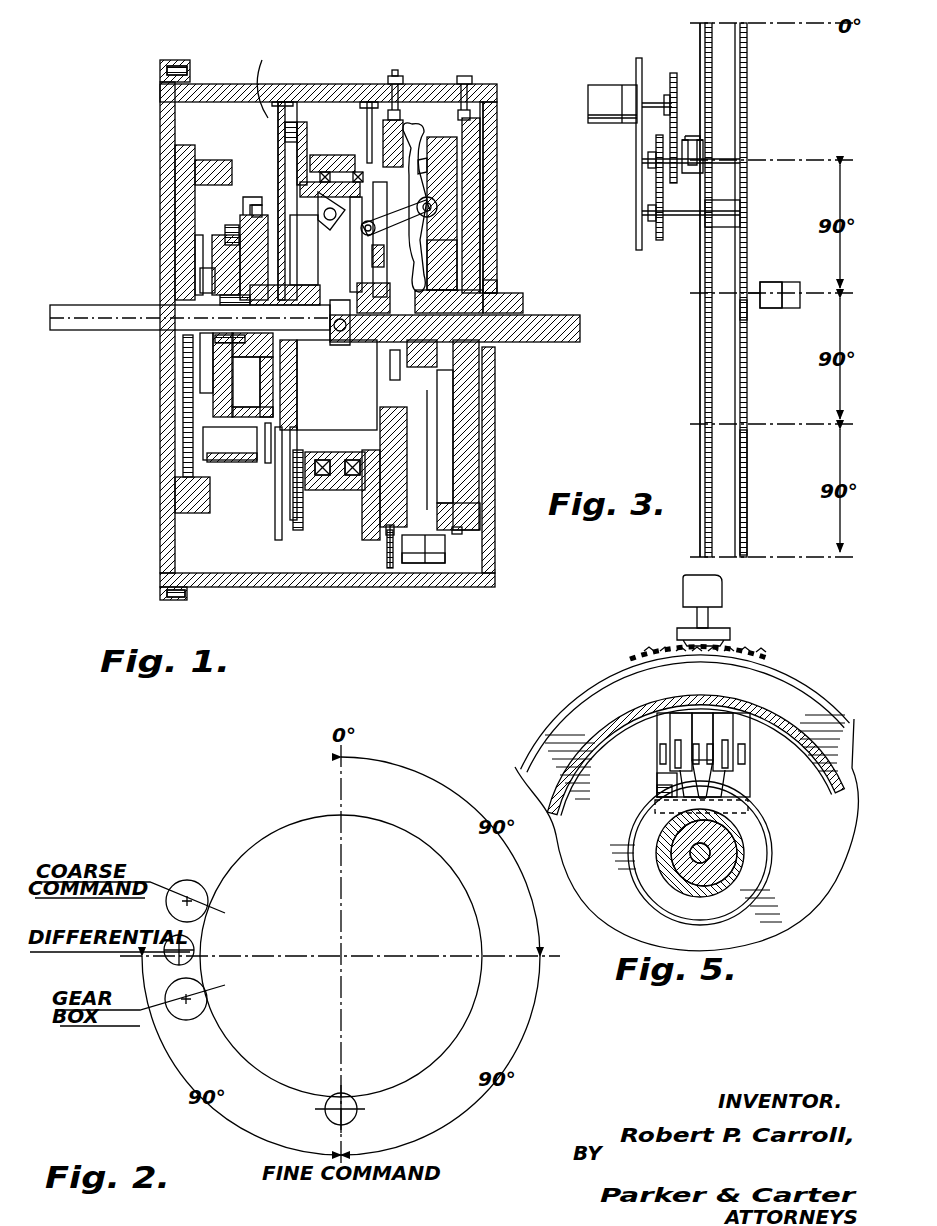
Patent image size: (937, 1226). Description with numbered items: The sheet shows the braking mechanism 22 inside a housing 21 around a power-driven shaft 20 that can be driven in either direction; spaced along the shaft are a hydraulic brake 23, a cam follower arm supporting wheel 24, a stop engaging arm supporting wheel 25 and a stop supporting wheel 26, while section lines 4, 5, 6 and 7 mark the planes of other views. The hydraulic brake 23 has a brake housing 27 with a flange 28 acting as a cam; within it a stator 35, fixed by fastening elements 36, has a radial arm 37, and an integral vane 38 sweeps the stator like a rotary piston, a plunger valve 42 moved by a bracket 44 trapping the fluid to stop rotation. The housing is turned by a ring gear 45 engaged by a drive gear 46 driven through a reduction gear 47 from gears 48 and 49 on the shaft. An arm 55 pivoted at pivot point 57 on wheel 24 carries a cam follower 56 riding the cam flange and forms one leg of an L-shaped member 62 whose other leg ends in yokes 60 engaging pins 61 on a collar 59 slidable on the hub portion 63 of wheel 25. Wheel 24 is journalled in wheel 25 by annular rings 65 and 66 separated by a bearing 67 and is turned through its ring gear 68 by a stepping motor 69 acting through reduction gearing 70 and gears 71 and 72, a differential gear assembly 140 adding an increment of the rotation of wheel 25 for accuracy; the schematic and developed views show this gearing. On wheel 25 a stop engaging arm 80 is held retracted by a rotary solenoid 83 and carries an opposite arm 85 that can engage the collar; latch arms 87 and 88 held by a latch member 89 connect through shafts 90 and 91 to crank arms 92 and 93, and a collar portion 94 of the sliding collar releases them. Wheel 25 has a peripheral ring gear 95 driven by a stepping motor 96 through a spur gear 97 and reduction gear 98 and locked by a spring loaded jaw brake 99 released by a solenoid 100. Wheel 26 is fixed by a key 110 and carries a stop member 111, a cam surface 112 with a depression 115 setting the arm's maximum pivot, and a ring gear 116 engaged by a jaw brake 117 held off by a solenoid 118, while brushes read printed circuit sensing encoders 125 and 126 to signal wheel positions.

In FIG. 1, the section line 4- 4 is at (415, 80).
In FIG. 1, the section line 5— 5 is at (405, 28).
In FIG. 1, the section line 6- 6 is at (372, 102).
In FIG. 1, the section line 7- 7 is at (260, 185).
In FIG. 1, the power-driven shaft 20 is at (540, 316).
In FIG. 5, the power-driven shaft 20 is at (692, 856).
In FIG. 1, the housing 21 is at (482, 230).
In FIG. 1, the braking mechanism 22 is at (252, 118).
In FIG. 1, the hydraulic brake 23 is at (245, 238).
In FIG. 1, the cam follower arm supporting wheel 24 is at (300, 118).
In FIG. 3, the cam follower arm supporting wheel 24 is at (698, 340).
In FIG. 1, the stop engaging arm supporting wheel 25 is at (405, 118).
In FIG. 3, the stop engaging arm supporting wheel 25 is at (749, 446).
In FIG. 5, the stop engaging arm supporting wheel 25 is at (800, 660).
In FIG. 1, the stop supporting wheel 26 is at (488, 152).
In FIG. 1, the brake housing 27 is at (290, 398).
In FIG. 1, the flange 28 is at (272, 470).
In FIG. 1, the stator 35 is at (245, 360).
In FIG. 1, the fastening elements 36 is at (225, 340).
In FIG. 1, the arm 37 is at (245, 408).
In FIG. 1, the vane 38 is at (236, 276).
In FIG. 1, the plunger valve 42 is at (232, 244).
In FIG. 1, the bracket 44 is at (243, 200).
In FIG. 1, the ring gear 45 is at (257, 438).
In FIG. 1, the drive gear 46 is at (265, 450).
In FIG. 1, the reduction gear 47 is at (210, 465).
In FIG. 1, the gear 48 is at (185, 440).
In FIG. 1, the gear 49 is at (240, 236).
In FIG. 1, the arm 55 is at (262, 204).
In FIG. 1, the cam follower 56 is at (320, 252).
In FIG. 1, the pivot point 57 is at (326, 217).
In FIG. 1, the collar 59 is at (380, 285).
In FIG. 5, the collar 59 is at (725, 868).
In FIG. 1, the yokes 60 is at (385, 313).
In FIG. 1, the pins 61 is at (330, 326).
In FIG. 1, the L-shaped member 62 is at (270, 295).
In FIG. 1, the hub portion 63 is at (400, 370).
In FIG. 5, the hub portion 63 is at (718, 848).
In FIG. 1, the annular ring 65 is at (352, 478).
In FIG. 1, the annular ring 66 is at (330, 480).
In FIG. 1, the bearing 67 is at (326, 490).
In FIG. 1, the ring gear 68 is at (300, 530).
In FIG. 3, the ring gear 68 is at (702, 260).
In FIG. 3, the stepping motor 69 is at (600, 88).
In FIG. 3, the reduction gearing 70 is at (628, 122).
In FIG. 3, the gear 71 is at (676, 76).
In FIG. 3, the gear 72 is at (700, 180).
In FIG. 1, the stop engaging arm 80 is at (435, 203).
In FIG. 1, the rotary solenoid 83 is at (440, 210).
In FIG. 1, the arm 85 is at (440, 260).
In FIG. 1, the latch arm 87 is at (350, 268).
In FIG. 5, the latch arm 87 is at (728, 778).
In FIG. 5, the latch arm 88 is at (658, 778).
In FIG. 1, the latch member 89 is at (372, 250).
In FIG. 5, the latch member 89 is at (655, 790).
In FIG. 5, the shaft 90 is at (745, 752).
In FIG. 5, the shaft 91 is at (658, 752).
In FIG. 1, the crank arm 92 is at (398, 212).
In FIG. 5, the crank arm 92 is at (705, 730).
In FIG. 5, the crank arm 93 is at (683, 728).
In FIG. 1, the collar portion 94 is at (362, 430).
In FIG. 5, the collar portion 94 is at (732, 804).
In FIG. 1, the ring gear 95 is at (386, 538).
In FIG. 3, the ring gear 95 is at (748, 378).
In FIG. 5, the ring gear 95 is at (641, 650).
In FIG. 1, the stepping motor 96 is at (445, 550).
In FIG. 3, the stepping motor 96 is at (796, 282).
In FIG. 1, the spur gear 97 is at (390, 566).
In FIG. 3, the spur gear 97 is at (748, 308).
In FIG. 1, the reduction gear 98 is at (413, 560).
In FIG. 3, the reduction gear 98 is at (770, 282).
In FIG. 5, the spring loaded jaw brake 99 is at (730, 630).
In FIG. 1, the solenoid 100 is at (398, 70).
In FIG. 5, the solenoid 100 is at (725, 588).
In FIG. 1, the key 110 is at (470, 283).
In FIG. 1, the stop member 111 is at (470, 150).
In FIG. 1, the cam surface 112 is at (447, 520).
In FIG. 1, the depression 115 is at (427, 104).
In FIG. 1, the ring gear 116 is at (462, 530).
In FIG. 1, the spring loaded jaw brake 117 is at (484, 105).
In FIG. 1, the solenoid 118 is at (472, 90).
In FIG. 1, the printed circuit sensing encoder 125 is at (263, 74).
In FIG. 1, the printed circuit sensing encoder 126 is at (368, 145).
In FIG. 3, the differential gear assembly 140 is at (656, 230).